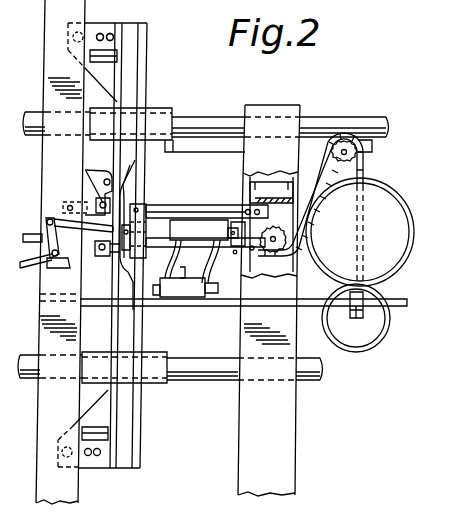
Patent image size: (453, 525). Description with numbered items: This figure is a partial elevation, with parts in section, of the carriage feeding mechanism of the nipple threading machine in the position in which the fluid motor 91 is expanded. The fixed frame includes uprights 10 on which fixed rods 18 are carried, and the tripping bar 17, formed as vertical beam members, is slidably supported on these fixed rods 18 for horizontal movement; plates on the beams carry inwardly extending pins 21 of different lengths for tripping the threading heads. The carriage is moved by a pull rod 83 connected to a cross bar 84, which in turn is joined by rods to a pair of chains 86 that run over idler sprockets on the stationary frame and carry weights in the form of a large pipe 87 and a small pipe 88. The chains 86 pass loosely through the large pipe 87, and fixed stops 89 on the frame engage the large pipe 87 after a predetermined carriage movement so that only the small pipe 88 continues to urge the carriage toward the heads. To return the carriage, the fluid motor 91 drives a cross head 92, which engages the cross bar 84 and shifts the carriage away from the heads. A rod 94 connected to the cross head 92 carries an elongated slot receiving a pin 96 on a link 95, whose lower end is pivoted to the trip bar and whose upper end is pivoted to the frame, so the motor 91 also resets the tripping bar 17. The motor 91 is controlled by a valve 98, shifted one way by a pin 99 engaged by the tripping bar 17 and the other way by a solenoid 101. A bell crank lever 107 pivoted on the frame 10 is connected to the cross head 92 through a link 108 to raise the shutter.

The uprights 10 is at (84, 5).
The tripping bar 17 is at (147, 80).
The fixed rods 18 is at (315, 124).
The pins 21 is at (100, 33).
The pull rod 83 is at (36, 237).
The cross bar 84 is at (125, 252).
The chains 86 is at (366, 172).
The pipe 87 is at (395, 190).
The pipe 88 is at (360, 348).
The fixed stops 89 is at (372, 300).
The fluid motor 91 is at (199, 224).
The cross head 92 is at (143, 207).
The rod 94 is at (172, 208).
The link 95 is at (100, 185).
The pin 96 is at (103, 205).
The valve 98 is at (188, 297).
The pin 99 is at (151, 295).
The solenoid 101 is at (208, 290).
The bell crank lever 107 is at (52, 233).
The link 108 is at (72, 205).